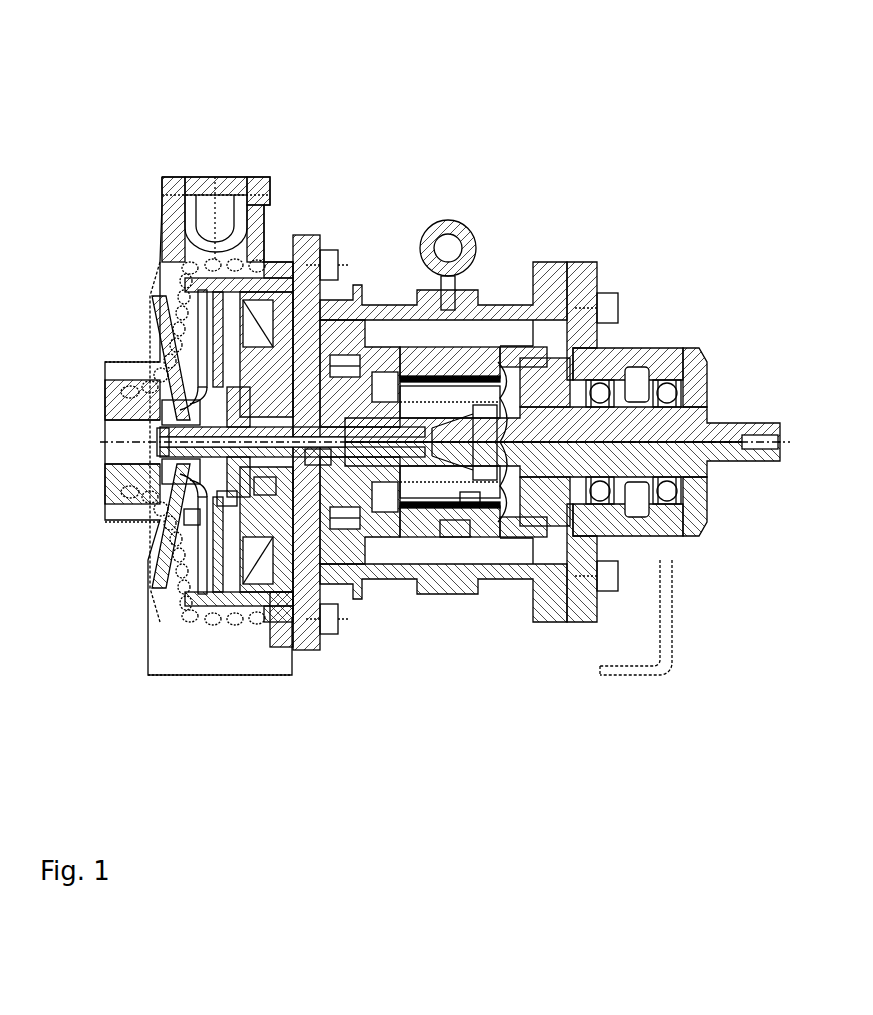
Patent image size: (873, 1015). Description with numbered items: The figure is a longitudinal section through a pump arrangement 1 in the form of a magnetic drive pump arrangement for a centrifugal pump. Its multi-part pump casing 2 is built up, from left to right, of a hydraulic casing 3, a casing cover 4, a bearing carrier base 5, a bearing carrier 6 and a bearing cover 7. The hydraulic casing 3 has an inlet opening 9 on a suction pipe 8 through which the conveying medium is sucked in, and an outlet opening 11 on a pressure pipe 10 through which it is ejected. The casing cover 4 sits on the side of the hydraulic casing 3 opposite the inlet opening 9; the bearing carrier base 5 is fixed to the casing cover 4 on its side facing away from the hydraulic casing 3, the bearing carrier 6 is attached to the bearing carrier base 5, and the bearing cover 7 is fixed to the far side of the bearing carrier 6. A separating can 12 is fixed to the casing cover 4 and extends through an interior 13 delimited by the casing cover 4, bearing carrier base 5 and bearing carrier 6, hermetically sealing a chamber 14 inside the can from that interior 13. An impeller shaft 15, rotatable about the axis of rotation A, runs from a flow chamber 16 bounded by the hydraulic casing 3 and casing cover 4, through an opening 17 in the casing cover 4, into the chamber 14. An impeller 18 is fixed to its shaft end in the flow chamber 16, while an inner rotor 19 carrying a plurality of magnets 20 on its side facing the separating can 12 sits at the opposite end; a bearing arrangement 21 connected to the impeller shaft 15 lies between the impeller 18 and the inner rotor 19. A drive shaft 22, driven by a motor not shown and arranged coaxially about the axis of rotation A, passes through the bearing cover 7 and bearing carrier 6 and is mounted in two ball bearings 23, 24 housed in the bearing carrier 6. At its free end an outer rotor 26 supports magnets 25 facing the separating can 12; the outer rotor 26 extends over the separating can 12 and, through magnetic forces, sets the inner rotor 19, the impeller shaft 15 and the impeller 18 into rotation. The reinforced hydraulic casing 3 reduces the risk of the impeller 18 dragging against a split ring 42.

The pump arrangement 1 is at (164, 396).
The pump casing 2 is at (475, 396).
The hydraulic casing 3 is at (170, 298).
The casing cover 4 is at (302, 258).
The bearing carrier base 5 is at (487, 308).
The bearing carrier 6 is at (637, 356).
The bearing cover 7 is at (693, 356).
The suction pipe 8 is at (110, 498).
The inlet opening 9 is at (113, 452).
The pressure pipe 10 is at (183, 190).
The outlet opening 11 is at (215, 197).
The separating can 12 is at (500, 377).
The interior 13 is at (538, 330).
The chamber 14 is at (500, 488).
The impeller shaft 15 is at (317, 453).
The flow chamber 16 is at (193, 517).
The opening 17 is at (263, 483).
The impeller 18 is at (226, 498).
The inner rotor 19 is at (433, 480).
The magnets 20 is at (470, 498).
The bearing arrangement 21 is at (289, 384).
The drive shaft 22 is at (737, 452).
The ball bearing 23 is at (601, 493).
The ball bearing 24 is at (673, 497).
The magnets 25 is at (478, 510).
The outer rotor 26 is at (455, 530).
The split ring 42 is at (180, 497).
The axis of rotation A is at (784, 442).